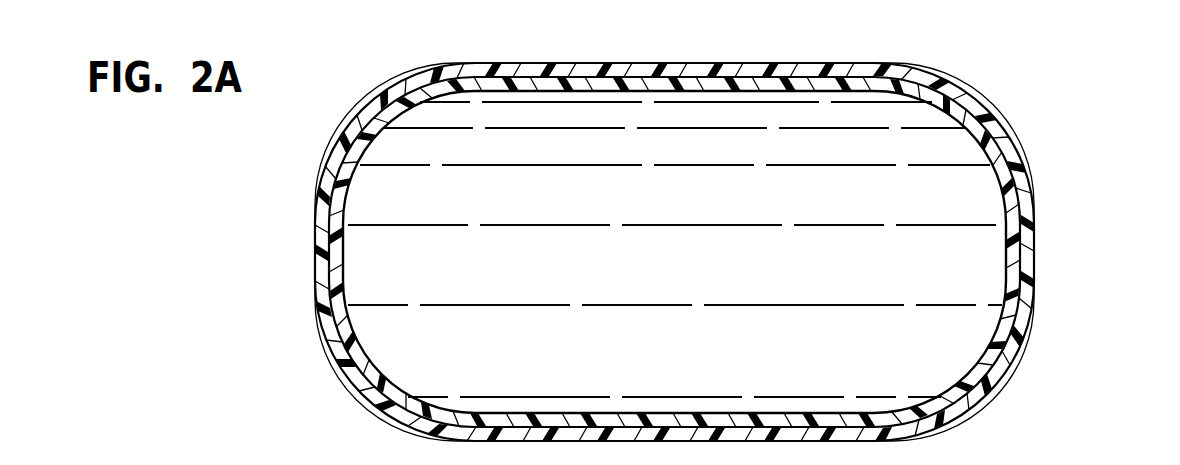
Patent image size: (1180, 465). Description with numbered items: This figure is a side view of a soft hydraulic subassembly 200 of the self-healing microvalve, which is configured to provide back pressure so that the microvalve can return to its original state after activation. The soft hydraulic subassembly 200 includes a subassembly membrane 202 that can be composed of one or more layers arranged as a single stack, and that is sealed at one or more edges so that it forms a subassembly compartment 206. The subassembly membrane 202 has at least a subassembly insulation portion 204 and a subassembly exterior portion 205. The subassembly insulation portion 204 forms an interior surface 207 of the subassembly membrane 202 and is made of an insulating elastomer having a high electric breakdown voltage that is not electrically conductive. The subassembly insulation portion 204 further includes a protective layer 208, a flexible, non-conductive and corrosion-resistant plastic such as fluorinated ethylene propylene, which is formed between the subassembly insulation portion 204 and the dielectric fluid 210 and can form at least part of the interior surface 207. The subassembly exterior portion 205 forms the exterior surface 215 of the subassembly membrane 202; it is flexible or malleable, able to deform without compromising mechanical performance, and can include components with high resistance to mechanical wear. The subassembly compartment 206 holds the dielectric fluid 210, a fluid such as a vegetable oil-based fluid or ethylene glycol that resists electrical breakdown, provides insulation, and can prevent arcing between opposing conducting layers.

The soft hydraulic subassembly 200 is at (853, 47).
The subassembly membrane 202 is at (958, 82).
The subassembly insulation portion 204 is at (984, 119).
The subassembly exterior portion 205 is at (1030, 254).
The subassembly compartment 206 is at (973, 182).
The interior surface 207 is at (761, 90).
The protective layer 208 is at (678, 90).
The dielectric fluid 210 is at (958, 278).
The exterior surface 215 is at (1017, 348).